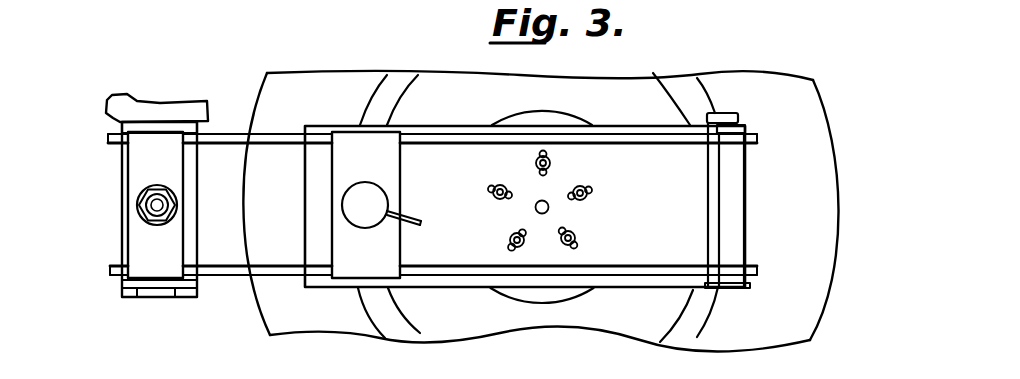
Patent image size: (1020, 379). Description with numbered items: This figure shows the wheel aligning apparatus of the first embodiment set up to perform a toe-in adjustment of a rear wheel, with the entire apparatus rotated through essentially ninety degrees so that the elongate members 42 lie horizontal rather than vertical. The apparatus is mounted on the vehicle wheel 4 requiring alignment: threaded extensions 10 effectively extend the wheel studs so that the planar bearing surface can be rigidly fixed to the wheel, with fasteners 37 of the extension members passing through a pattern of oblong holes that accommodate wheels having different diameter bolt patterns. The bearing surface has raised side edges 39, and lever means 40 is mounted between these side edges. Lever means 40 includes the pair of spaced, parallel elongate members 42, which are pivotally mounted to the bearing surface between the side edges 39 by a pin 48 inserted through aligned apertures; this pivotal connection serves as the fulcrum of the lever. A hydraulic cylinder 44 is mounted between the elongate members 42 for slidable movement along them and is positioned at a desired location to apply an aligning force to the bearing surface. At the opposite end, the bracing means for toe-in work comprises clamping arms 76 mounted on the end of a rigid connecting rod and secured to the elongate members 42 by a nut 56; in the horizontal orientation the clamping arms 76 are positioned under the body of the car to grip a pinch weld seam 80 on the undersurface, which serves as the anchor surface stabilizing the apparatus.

The vehicle wheel 4 is at (748, 87).
The threaded extensions 10 is at (596, 199).
The fasteners 37 is at (510, 240).
The raised side edges 39 is at (473, 128).
The lever means 40 is at (228, 110).
The elongate members 42 is at (268, 138).
The hydraulic cylinder 44 is at (370, 197).
The pin 48 is at (715, 195).
The nut 56 is at (142, 207).
The clamping arms 76 is at (122, 167).
The pinch weld seam 80 is at (108, 111).